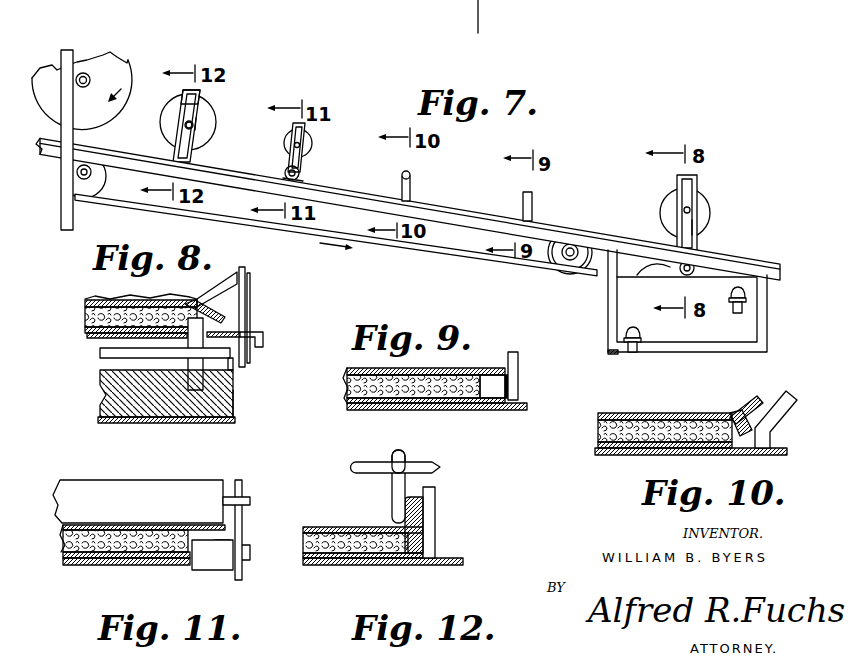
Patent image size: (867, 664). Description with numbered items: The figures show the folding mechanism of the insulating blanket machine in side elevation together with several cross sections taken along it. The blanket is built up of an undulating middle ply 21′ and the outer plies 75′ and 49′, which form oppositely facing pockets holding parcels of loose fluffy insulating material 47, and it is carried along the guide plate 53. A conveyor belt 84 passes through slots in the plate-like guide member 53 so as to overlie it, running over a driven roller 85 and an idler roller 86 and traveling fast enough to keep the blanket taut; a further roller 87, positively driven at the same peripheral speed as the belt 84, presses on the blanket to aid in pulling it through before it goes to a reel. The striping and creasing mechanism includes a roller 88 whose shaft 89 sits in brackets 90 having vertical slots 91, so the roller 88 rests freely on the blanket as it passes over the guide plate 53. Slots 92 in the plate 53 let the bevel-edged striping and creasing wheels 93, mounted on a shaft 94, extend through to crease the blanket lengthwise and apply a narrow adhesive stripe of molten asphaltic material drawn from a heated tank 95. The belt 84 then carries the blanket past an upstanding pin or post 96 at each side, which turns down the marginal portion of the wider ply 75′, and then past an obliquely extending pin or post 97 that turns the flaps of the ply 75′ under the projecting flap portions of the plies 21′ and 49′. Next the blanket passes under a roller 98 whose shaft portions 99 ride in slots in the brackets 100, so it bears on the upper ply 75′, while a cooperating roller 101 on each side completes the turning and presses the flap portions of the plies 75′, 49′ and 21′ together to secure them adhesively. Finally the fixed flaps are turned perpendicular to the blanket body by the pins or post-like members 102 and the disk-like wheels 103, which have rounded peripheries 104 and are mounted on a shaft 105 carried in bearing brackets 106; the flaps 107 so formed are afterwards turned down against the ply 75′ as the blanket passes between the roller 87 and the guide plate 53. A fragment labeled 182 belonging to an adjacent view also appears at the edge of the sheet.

In FIG. 7, the conveyor belt 84 is at (433, 202).
In FIG. 8, the conveyor belt 84 is at (88, 335).
In FIG. 9, the conveyor belt 84 is at (437, 404).
In FIG. 10, the conveyor belt 84 is at (598, 455).
In FIG. 11, the conveyor belt 84 is at (130, 565).
In FIG. 12, the conveyor belt 84 is at (368, 565).
In FIG. 7, the driven roller 85 is at (92, 182).
In FIG. 7, the idler roller 86 is at (567, 268).
In FIG. 7, the roller 87 is at (118, 67).
In FIG. 7, the roller 88 is at (703, 203).
In FIG. 8, the roller 88 is at (243, 280).
In FIG. 7, the shaft 89 is at (690, 213).
In FIG. 8, the shaft 89 is at (245, 270).
In FIG. 7, the brackets 90 is at (690, 182).
In FIG. 7, the vertical slots 91 is at (688, 223).
In FIG. 8, the slots 92 is at (232, 375).
In FIG. 7, the striping and creasing wheels 93 is at (670, 245).
In FIG. 8, the striping and creasing wheels 93 is at (230, 400).
In FIG. 7, the shaft 94 is at (663, 262).
In FIG. 8, the shaft 94 is at (120, 356).
In FIG. 7, the tank 95 is at (628, 310).
In FIG. 7, the upstanding pin or post 96 is at (533, 200).
In FIG. 9, the upstanding pin or post 96 is at (517, 360).
In FIG. 7, the obliquely extending pin or post 97 is at (411, 176).
In FIG. 10, the obliquely extending pin or post 97 is at (770, 412).
In FIG. 7, the roller 98 is at (308, 145).
In FIG. 11, the roller 98 is at (192, 483).
In FIG. 7, the shaft portions 99 is at (308, 157).
In FIG. 11, the shaft portions 99 is at (243, 503).
In FIG. 7, the brackets 100 is at (300, 166).
In FIG. 11, the brackets 100 is at (245, 520).
In FIG. 7, the roller 101 is at (287, 175).
In FIG. 11, the roller 101 is at (233, 563).
In FIG. 7, the pins or post-like members 102 is at (187, 135).
In FIG. 12, the pins or post-like members 102 is at (435, 515).
In FIG. 7, the disk-like wheels 103 is at (197, 100).
In FIG. 12, the disk-like wheels 103 is at (404, 451).
In FIG. 12, the rounded peripheries 104 is at (393, 510).
In FIG. 7, the shaft 105 is at (192, 125).
In FIG. 12, the shaft 105 is at (365, 462).
In FIG. 7, the bearing brackets 106 is at (197, 123).
In FIG. 12, the flaps 107 is at (415, 500).
In FIG. 7, the adjacent figure element 182 is at (455, 3).
In FIG. 8, the middle ply 21′ is at (93, 298).
In FIG. 9, the middle ply 21′ is at (390, 378).
In FIG. 10, the middle ply 21′ is at (740, 410).
In FIG. 11, the middle ply 21′ is at (170, 530).
In FIG. 8, the parcels of loose fluffy insulating material 47 is at (105, 400).
In FIG. 9, the parcels of loose fluffy insulating material 47 is at (357, 388).
In FIG. 11, the parcels of loose fluffy insulating material 47 is at (83, 543).
In FIG. 12, the parcels of loose fluffy insulating material 47 is at (368, 535).
In FIG. 8, the outer ply 49′ is at (133, 318).
In FIG. 9, the outer ply 49′ is at (352, 405).
In FIG. 10, the outer ply 49′ is at (753, 402).
In FIG. 11, the outer ply 49′ is at (125, 548).
In FIG. 7, the guide plate 53 is at (333, 193).
In FIG. 8, the guide plate 53 is at (230, 330).
In FIG. 9, the guide plate 53 is at (485, 410).
In FIG. 10, the guide plate 53 is at (610, 456).
In FIG. 11, the guide plate 53 is at (65, 560).
In FIG. 12, the guide plate 53 is at (306, 562).
In FIG. 8, the outer ply 75′ is at (228, 300).
In FIG. 9, the outer ply 75′ is at (515, 380).
In FIG. 10, the outer ply 75′ is at (738, 415).
In FIG. 11, the outer ply 75′ is at (143, 527).
In FIG. 12, the outer ply 75′ is at (318, 527).